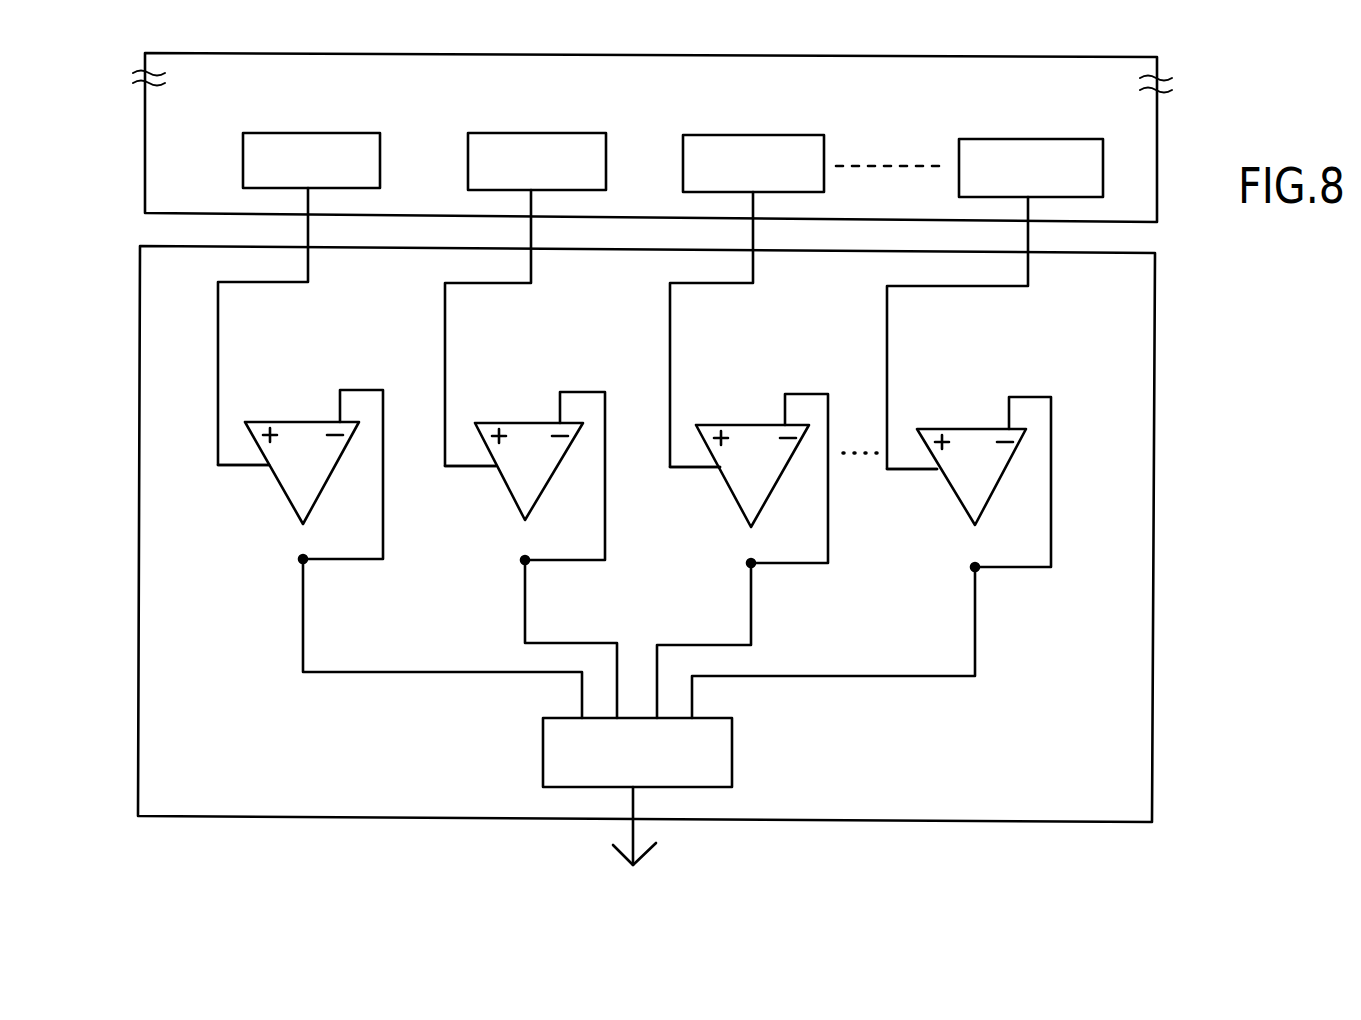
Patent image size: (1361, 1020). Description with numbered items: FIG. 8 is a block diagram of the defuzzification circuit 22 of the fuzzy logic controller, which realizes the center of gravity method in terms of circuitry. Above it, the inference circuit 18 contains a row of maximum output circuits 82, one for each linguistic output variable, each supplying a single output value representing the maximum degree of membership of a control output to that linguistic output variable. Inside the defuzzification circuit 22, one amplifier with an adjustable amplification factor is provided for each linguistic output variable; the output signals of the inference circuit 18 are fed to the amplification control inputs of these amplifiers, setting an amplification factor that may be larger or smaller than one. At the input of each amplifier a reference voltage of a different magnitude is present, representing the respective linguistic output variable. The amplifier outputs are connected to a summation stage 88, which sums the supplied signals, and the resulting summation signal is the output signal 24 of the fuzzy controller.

The inference circuit 18 is at (1148, 103).
The defuzzification circuit 22 is at (1133, 794).
The output signal 24 is at (633, 835).
The maximum output circuit 82 is at (369, 140).
The summation stage 88 is at (552, 755).